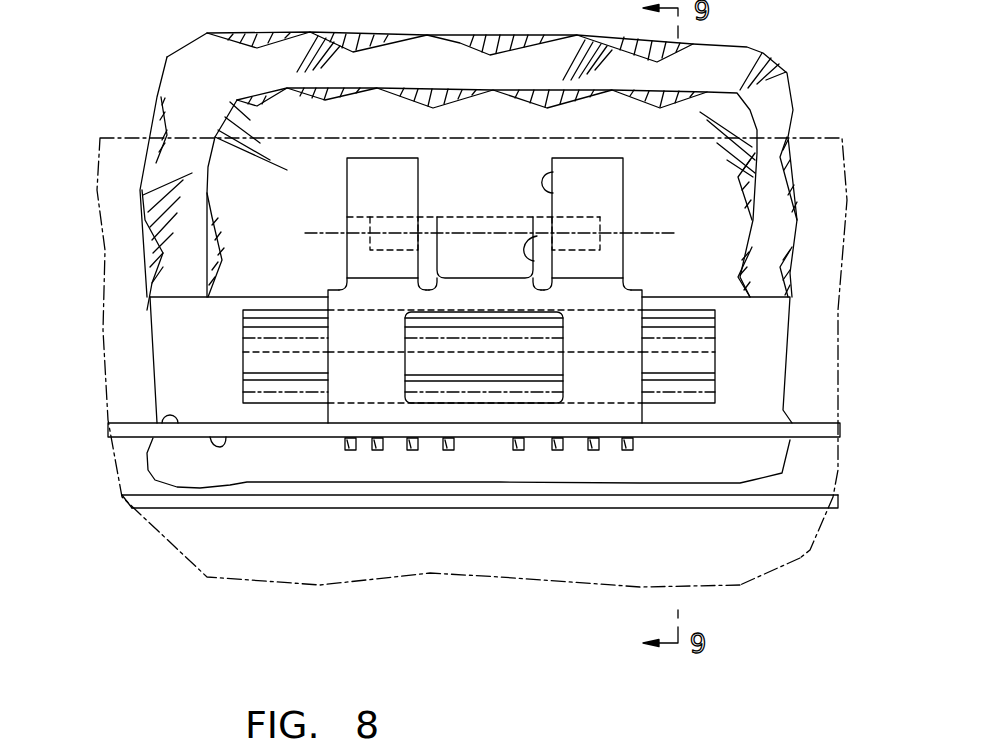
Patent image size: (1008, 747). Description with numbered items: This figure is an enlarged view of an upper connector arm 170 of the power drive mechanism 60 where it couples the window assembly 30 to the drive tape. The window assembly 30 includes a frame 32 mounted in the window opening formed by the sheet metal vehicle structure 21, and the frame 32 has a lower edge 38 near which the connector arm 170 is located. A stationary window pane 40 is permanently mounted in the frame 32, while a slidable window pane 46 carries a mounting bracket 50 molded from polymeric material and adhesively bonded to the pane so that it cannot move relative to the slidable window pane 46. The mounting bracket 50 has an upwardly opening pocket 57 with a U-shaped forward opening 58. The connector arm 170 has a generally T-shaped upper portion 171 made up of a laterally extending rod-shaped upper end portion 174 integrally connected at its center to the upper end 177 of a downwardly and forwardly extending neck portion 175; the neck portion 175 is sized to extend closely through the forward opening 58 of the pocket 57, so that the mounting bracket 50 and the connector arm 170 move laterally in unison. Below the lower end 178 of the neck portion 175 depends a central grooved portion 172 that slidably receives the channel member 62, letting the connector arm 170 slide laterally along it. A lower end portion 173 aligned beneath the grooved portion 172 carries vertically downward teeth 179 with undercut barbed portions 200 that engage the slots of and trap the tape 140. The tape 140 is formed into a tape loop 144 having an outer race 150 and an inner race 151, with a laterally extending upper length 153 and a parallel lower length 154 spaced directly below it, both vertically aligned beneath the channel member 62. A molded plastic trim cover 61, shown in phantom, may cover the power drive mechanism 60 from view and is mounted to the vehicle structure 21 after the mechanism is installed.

The vehicle structure 21 is at (226, 494).
The window assembly 30 is at (168, 28).
The frame 32 is at (167, 330).
The lower edge 38 is at (173, 297).
The first stationary window pane 40 is at (727, 60).
The first slidable window pane 46 is at (365, 105).
The mounting bracket 50 is at (356, 147).
The upwardly opening pocket 57 is at (553, 172).
The U-shaped forward opening 58 is at (537, 236).
The power drive mechanism 60 is at (468, 605).
The trim cover 61 is at (728, 555).
The channel member 62 is at (287, 320).
The tape 140 is at (297, 445).
The tape loop 144 is at (178, 521).
The outer race 150 is at (172, 425).
The inner race 151 is at (210, 437).
The upper length 153 is at (133, 430).
The lower length 154 is at (142, 500).
The upper connector arm 170 is at (655, 295).
The T-shaped upper portion 171 is at (428, 202).
The central grooved portion 172 is at (630, 362).
The lower end portion 173 is at (625, 413).
The rod-shaped upper end portion 174 is at (370, 217).
The neck portion 175 is at (430, 263).
The upper end 177 is at (430, 295).
The lower end 178 is at (433, 227).
The teeth 179 is at (412, 451).
The undercut barbed portions 200 is at (449, 451).